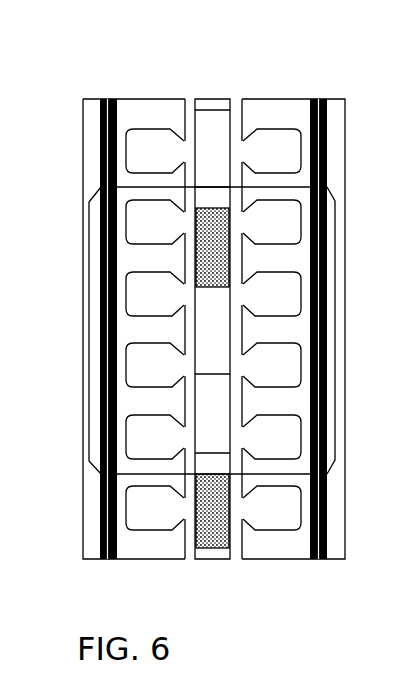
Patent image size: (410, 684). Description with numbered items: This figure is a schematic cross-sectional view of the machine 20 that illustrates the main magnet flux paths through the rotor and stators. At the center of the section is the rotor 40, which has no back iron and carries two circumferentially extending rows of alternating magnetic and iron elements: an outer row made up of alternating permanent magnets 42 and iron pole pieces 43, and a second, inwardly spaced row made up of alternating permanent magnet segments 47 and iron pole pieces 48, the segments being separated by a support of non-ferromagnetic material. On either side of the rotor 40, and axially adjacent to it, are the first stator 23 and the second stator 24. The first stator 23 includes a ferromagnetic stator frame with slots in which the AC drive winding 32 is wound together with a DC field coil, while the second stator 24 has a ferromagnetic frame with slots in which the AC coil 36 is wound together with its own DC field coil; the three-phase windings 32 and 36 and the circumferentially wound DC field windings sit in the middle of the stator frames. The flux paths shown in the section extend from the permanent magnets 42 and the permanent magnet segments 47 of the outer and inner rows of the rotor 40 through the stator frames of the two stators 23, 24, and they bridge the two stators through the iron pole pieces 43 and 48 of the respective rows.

The machine 20 is at (142, 76).
The first stator 23 is at (346, 152).
The second stator 24 is at (85, 129).
The AC drive winding 32 is at (297, 553).
The AC coil 36 is at (147, 563).
The rotor 40 is at (224, 86).
The permanent magnets 42 is at (218, 545).
The iron pole pieces 43 is at (217, 140).
The permanent magnet segments 47 is at (213, 263).
The iron pole pieces 48 is at (213, 417).